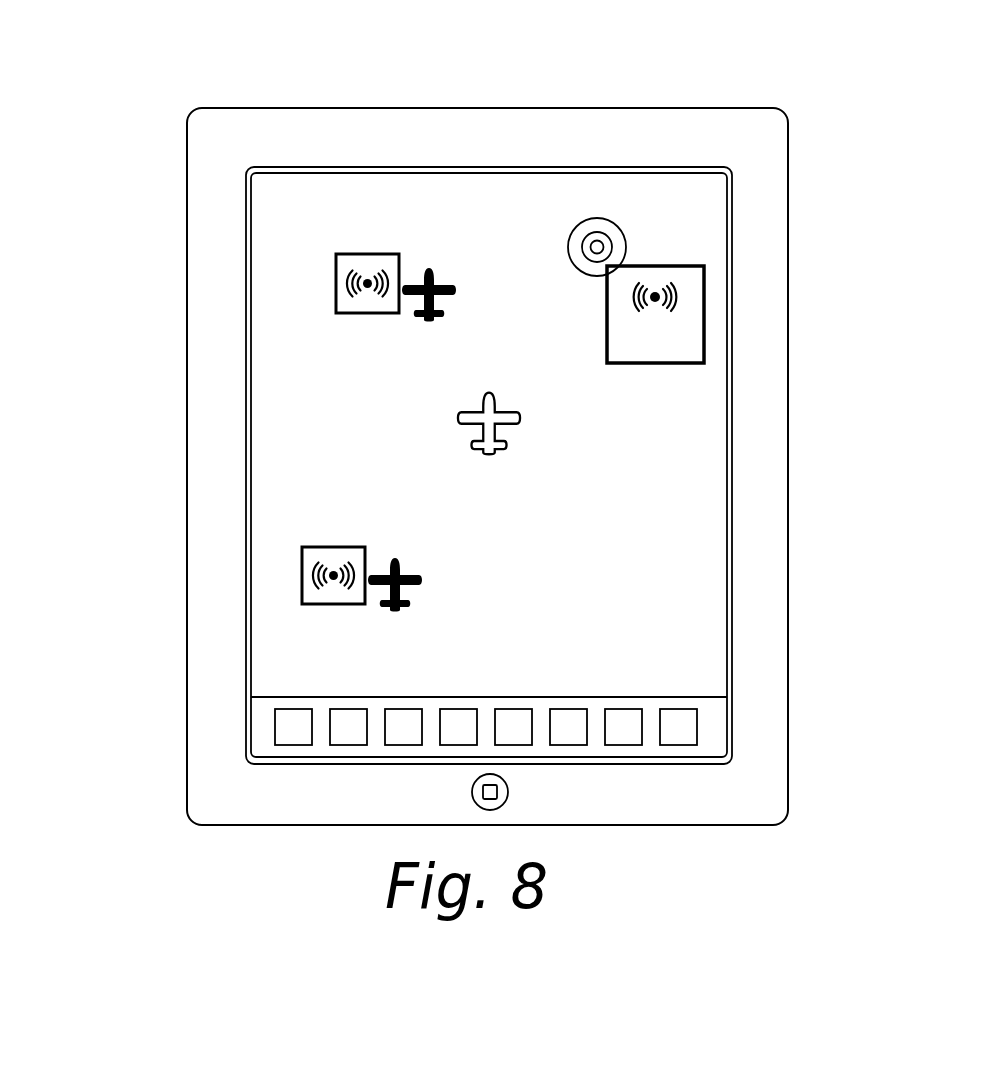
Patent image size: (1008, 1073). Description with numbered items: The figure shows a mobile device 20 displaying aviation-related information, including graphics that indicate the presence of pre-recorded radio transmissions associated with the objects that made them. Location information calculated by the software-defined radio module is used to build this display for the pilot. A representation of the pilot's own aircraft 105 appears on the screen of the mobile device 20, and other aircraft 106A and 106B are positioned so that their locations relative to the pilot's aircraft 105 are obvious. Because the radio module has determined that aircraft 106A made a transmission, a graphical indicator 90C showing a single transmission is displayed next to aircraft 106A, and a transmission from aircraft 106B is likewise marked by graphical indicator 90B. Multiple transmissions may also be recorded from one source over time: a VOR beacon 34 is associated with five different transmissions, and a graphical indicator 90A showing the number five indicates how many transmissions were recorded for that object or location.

The mobile device 20 is at (177, 126).
The VOR beacon 34 is at (619, 241).
The graphical indicator 90A is at (680, 338).
The graphical indicator 90B is at (312, 558).
The graphical indicator 90C is at (338, 269).
The pilot's own aircraft 105 is at (505, 420).
The other aircraft 106A is at (434, 270).
The other aircraft 106B is at (385, 607).